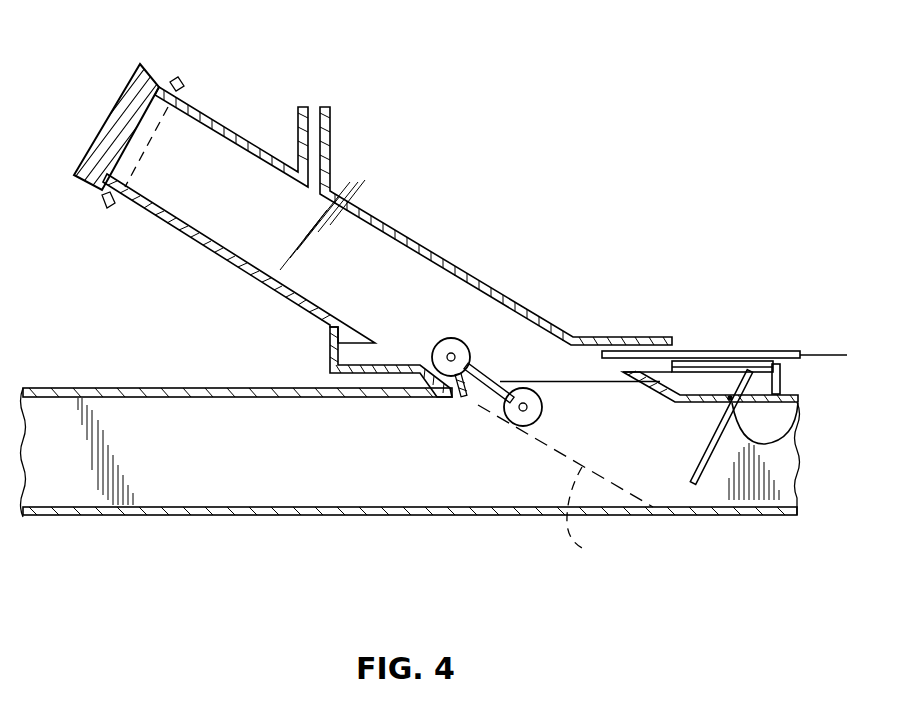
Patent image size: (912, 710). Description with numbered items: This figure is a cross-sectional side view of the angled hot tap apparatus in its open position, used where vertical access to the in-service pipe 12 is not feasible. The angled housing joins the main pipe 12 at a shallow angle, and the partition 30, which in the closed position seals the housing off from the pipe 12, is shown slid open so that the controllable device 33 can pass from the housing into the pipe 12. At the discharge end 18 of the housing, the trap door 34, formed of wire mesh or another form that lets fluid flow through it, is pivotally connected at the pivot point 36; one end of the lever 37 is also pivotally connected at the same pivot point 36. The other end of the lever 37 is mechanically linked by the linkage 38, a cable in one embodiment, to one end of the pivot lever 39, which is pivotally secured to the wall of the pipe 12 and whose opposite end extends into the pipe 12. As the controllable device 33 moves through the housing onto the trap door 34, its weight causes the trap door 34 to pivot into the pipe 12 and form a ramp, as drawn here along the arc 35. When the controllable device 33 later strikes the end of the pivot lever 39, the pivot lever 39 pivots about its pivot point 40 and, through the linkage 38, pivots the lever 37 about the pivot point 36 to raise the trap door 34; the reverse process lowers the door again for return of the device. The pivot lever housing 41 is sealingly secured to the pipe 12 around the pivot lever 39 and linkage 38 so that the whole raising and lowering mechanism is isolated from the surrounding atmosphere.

The pipe 12 is at (163, 388).
The discharge end 18 is at (583, 393).
The partition 30 is at (713, 350).
The controllable device 33 is at (478, 360).
The trap door 34 is at (576, 540).
The centerline path 35 is at (590, 413).
The pivot point 36 is at (480, 397).
The lever 37 is at (488, 403).
The linkage 38 is at (540, 383).
The pivot lever 39 is at (707, 453).
The pivot point 40 is at (800, 413).
The pivot lever housing 41 is at (782, 378).